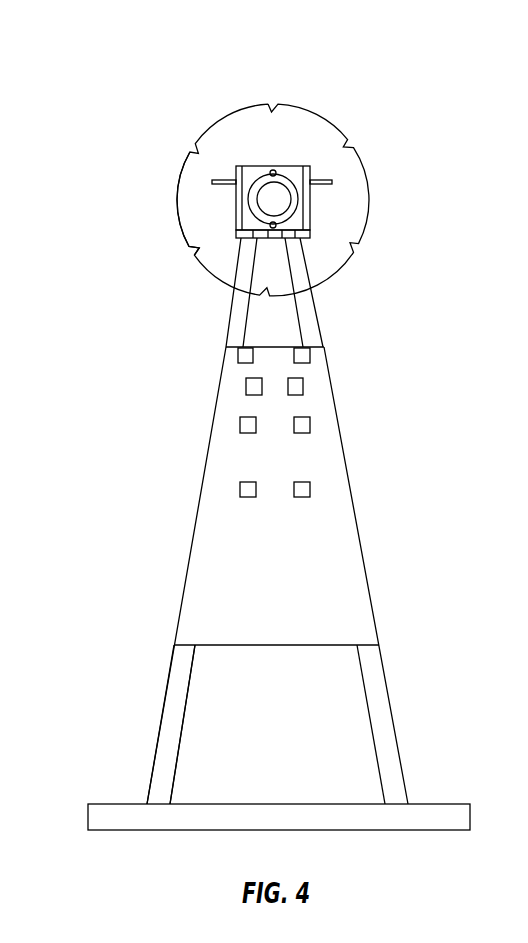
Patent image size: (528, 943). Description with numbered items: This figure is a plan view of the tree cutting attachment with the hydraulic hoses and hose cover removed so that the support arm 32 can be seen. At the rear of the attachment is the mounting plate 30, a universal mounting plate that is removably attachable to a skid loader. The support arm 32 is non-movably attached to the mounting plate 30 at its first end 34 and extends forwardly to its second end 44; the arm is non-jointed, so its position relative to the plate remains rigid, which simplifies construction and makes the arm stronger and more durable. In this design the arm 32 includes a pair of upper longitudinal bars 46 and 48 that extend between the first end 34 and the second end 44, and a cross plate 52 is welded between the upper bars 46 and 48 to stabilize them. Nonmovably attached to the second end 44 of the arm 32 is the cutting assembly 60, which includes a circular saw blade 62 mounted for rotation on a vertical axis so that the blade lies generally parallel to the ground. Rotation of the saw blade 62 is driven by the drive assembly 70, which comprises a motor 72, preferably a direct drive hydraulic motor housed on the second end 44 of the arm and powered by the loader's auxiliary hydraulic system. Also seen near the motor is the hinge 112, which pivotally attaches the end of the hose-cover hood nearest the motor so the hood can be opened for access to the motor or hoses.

The mounting plate 30 is at (445, 803).
The support arm 32 is at (357, 508).
The first end 34 is at (148, 787).
The second end 44 is at (310, 247).
The upper longitudinal bar 46 is at (170, 712).
The upper longitudinal bar 48 is at (380, 712).
The cross plate 52 is at (210, 493).
The cutting assembly 60 is at (282, 122).
The saw blade 62 is at (188, 195).
The drive assembly 70 is at (285, 163).
The motor 72 is at (267, 192).
The hinge 112 is at (307, 237).